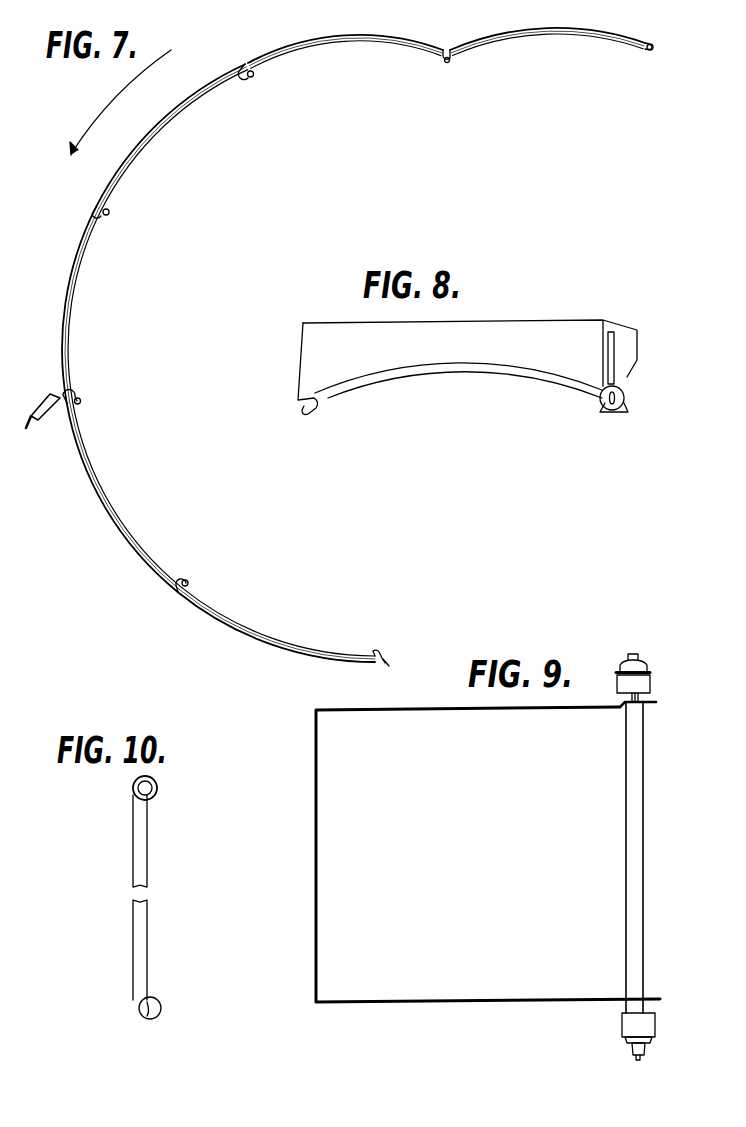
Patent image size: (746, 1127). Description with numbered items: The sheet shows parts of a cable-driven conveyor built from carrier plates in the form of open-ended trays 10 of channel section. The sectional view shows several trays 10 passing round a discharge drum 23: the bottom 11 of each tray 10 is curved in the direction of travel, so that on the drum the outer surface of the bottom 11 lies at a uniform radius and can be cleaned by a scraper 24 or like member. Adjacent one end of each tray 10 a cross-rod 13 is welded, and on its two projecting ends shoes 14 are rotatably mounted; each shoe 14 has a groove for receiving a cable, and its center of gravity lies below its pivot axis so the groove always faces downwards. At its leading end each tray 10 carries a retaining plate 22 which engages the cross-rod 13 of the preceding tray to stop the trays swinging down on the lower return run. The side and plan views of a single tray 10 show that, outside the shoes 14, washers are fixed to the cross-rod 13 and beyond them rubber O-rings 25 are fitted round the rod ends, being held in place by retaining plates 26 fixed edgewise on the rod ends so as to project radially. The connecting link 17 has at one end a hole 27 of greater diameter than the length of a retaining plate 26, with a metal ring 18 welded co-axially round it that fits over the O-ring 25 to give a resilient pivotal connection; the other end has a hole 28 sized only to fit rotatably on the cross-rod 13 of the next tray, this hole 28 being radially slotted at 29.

In FIG. 9, the tray 10 is at (425, 1004).
In FIG. 7, the bottom 11 is at (141, 136).
In FIG. 7, the cross-rod 13 is at (253, 76).
In FIG. 9, the cross-rod 13 is at (626, 1010).
In FIG. 8, the shoe 14 is at (630, 412).
In FIG. 9, the shoe 14 is at (651, 695).
In FIG. 10, the connecting link 17 is at (133, 866).
In FIG. 10, the metal ring 18 is at (155, 796).
In FIG. 7, the retaining plate 22 is at (448, 64).
In FIG. 7, the discharge drum 23 is at (118, 457).
In FIG. 7, the scraper 24 is at (68, 394).
In FIG. 9, the O-ring 25 is at (640, 656).
In FIG. 8, the retaining plate 26 is at (600, 412).
In FIG. 9, the retaining plate 26 is at (628, 655).
In FIG. 10, the hole 27 is at (138, 791).
In FIG. 10, the hole 28 is at (140, 1010).
In FIG. 10, the radial slot 29 is at (128, 1037).